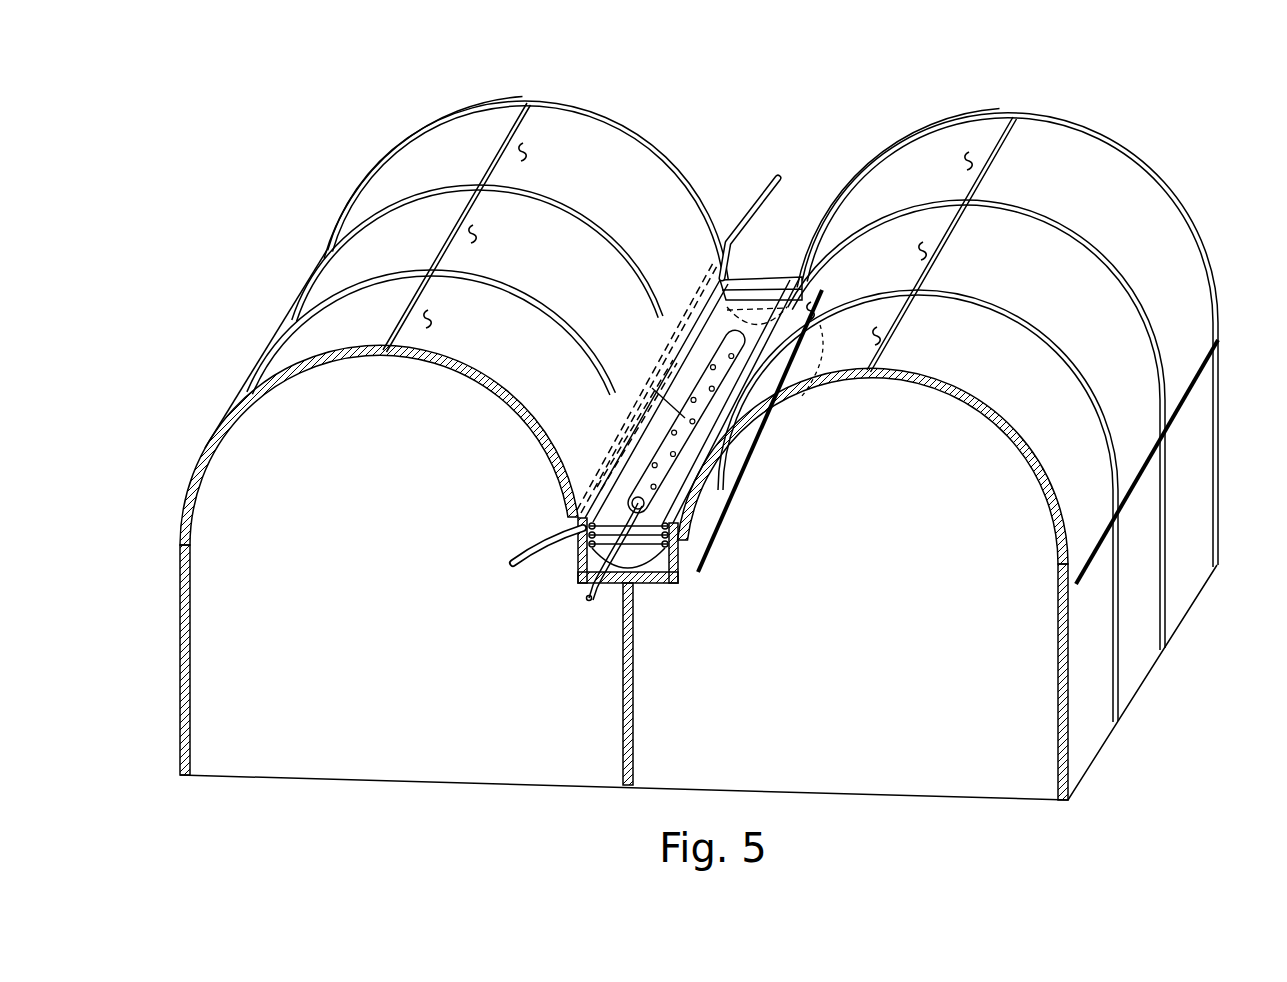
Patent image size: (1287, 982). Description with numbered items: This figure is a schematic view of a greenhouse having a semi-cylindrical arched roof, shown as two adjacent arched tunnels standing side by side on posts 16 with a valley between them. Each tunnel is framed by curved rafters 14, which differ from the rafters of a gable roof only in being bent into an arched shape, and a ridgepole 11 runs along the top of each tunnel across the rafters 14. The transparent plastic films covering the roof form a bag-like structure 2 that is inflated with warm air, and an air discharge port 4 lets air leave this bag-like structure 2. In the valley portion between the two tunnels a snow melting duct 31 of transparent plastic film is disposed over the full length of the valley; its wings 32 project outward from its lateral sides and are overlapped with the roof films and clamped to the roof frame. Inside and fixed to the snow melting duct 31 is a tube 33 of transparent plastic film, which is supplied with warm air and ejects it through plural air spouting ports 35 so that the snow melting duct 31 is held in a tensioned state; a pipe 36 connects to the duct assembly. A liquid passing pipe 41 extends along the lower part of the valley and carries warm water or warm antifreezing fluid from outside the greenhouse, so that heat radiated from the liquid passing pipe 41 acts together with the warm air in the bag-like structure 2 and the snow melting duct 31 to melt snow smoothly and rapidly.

The bag-like structure 2 is at (558, 106).
The air discharge port 4 is at (436, 318).
The ridgepole 11 is at (527, 126).
The rafter 14 is at (1087, 233).
The post 16 is at (194, 660).
The snow melting duct 31 is at (752, 282).
The wing 32 is at (704, 570).
The tube 33 is at (655, 370).
The air spouting port 35 is at (733, 354).
The pipe 36 is at (589, 600).
The liquid passing pipe 41 is at (601, 456).